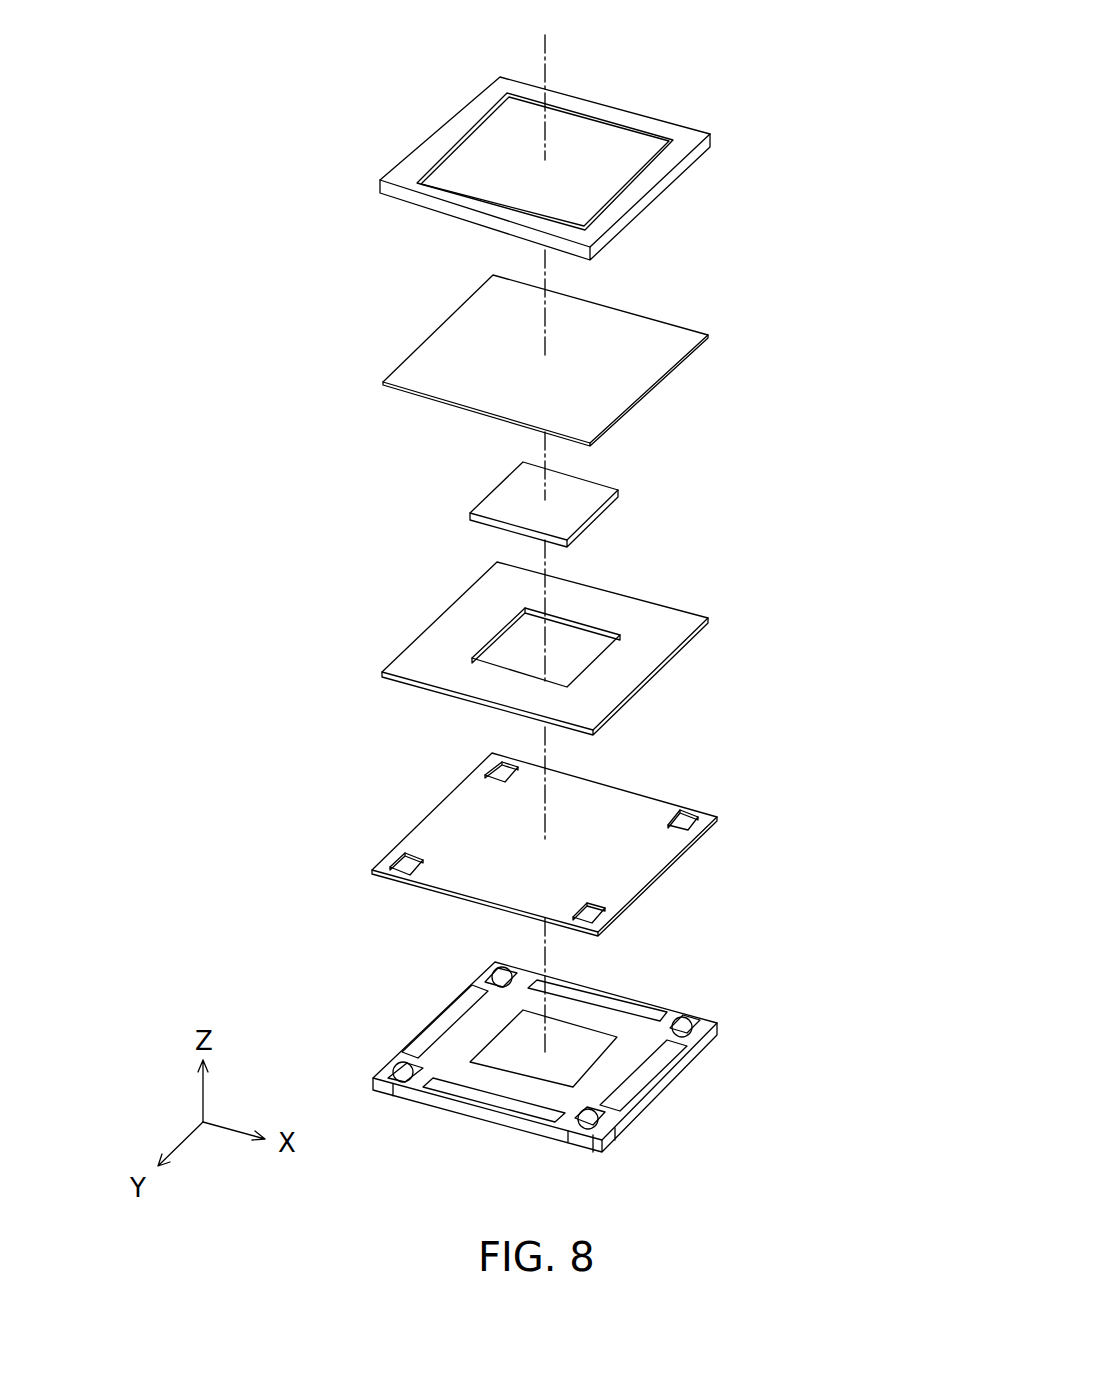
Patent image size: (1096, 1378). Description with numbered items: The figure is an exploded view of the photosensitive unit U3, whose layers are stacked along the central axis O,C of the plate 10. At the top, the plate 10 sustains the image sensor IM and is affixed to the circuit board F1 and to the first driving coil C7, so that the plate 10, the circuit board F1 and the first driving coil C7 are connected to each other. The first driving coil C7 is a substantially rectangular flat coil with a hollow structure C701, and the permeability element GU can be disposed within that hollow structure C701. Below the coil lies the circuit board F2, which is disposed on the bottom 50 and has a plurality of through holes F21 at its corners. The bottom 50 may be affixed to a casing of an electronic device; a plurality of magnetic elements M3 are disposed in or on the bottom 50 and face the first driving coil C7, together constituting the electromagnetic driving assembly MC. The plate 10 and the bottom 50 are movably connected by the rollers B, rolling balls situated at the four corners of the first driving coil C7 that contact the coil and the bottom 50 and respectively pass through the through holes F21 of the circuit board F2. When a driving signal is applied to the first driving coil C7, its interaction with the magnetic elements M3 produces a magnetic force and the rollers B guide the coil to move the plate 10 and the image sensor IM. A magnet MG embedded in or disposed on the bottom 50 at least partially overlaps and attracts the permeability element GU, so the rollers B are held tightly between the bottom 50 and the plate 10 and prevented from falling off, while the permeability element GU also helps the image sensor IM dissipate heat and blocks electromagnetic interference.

The photosensitive unit U3 is at (262, 36).
The electromagnetic driving assembly MC is at (288, 76).
The optical axis / center O,C is at (543, 528).
The plate 10 is at (577, 154).
The image sensor IM is at (600, 152).
The circuit board F1 is at (623, 325).
The permeability element GU is at (570, 507).
The first driving coil C7 is at (561, 636).
The hollow structure C701 is at (495, 638).
The circuit board F2 is at (568, 834).
The through holes F21 is at (500, 770).
The bottom 50 is at (551, 1054).
The magnet MG is at (560, 1067).
The magnetic elements M3 is at (447, 1025).
The rollers B is at (505, 977).